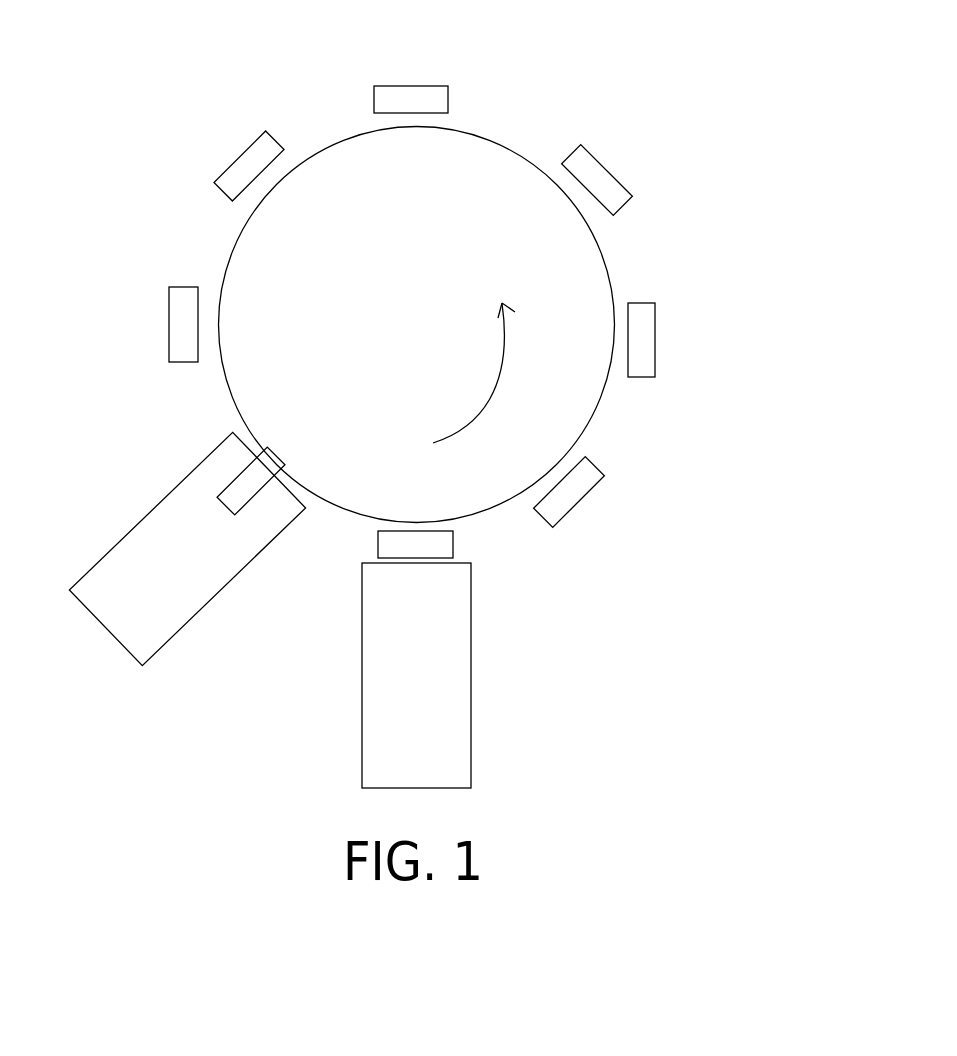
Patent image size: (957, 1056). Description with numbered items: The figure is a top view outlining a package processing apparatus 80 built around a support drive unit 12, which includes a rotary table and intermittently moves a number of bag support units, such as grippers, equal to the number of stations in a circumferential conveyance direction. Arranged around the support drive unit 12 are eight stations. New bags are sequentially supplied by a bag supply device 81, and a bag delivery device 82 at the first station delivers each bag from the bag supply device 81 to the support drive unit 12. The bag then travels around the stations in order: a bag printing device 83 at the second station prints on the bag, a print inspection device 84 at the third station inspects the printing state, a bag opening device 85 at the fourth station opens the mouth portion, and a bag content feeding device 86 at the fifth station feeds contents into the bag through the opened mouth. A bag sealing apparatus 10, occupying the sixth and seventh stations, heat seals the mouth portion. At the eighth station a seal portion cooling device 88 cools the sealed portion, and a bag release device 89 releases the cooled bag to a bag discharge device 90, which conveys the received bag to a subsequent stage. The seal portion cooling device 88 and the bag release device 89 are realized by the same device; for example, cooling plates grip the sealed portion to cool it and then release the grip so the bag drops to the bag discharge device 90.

The bag sealing apparatus 10 is at (242, 165).
The support drive unit 12 is at (495, 160).
The package processing apparatus 80 is at (675, 95).
The bag supply device 81 is at (460, 664).
The bag delivery device 82 is at (443, 545).
The bag printing device 83 is at (575, 495).
The print inspection device 84 is at (643, 340).
The bag opening device 85 is at (617, 198).
The bag content feeding device 86 is at (408, 95).
The seal portion cooling device 88 is at (205, 460).
The bag release device 89 is at (230, 458).
The bag discharge device 90 is at (157, 523).